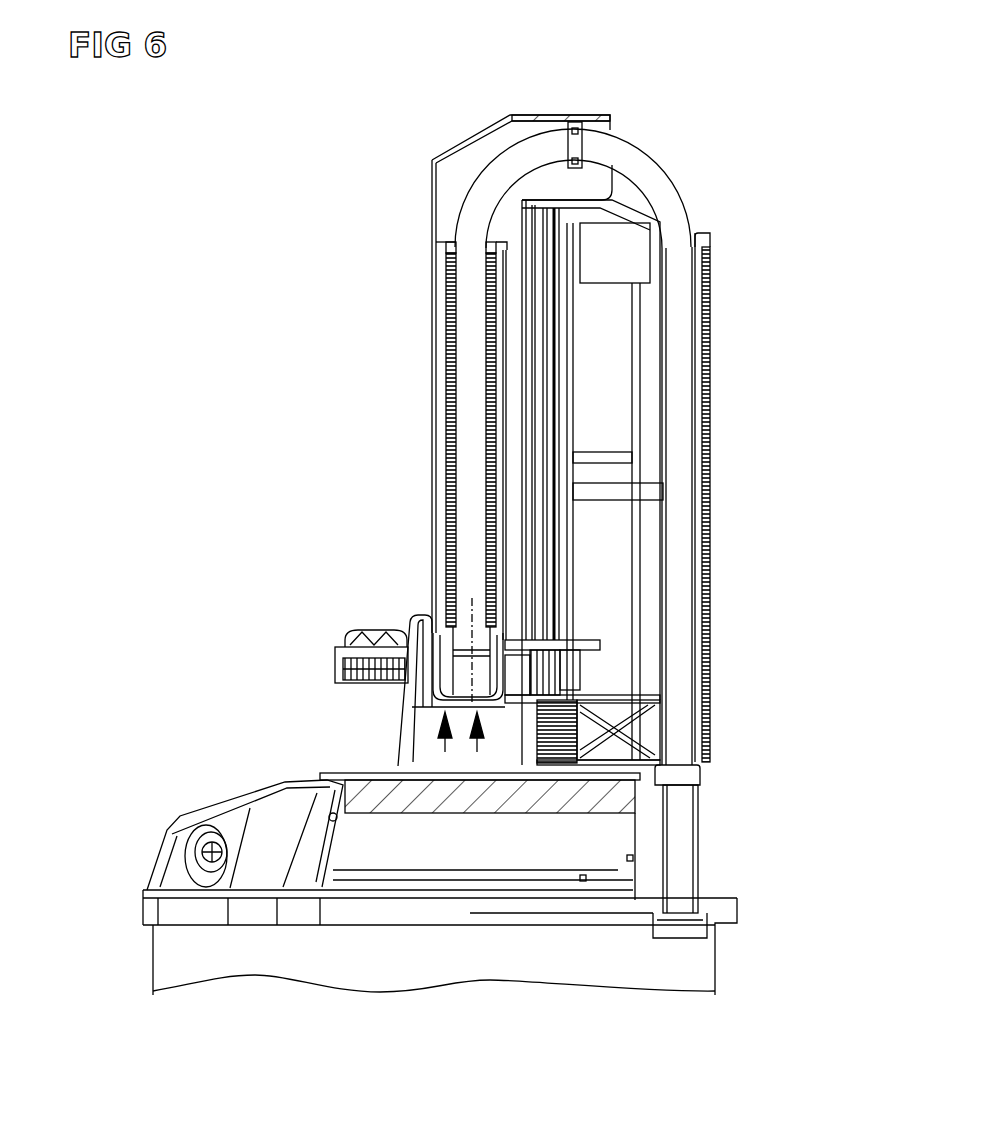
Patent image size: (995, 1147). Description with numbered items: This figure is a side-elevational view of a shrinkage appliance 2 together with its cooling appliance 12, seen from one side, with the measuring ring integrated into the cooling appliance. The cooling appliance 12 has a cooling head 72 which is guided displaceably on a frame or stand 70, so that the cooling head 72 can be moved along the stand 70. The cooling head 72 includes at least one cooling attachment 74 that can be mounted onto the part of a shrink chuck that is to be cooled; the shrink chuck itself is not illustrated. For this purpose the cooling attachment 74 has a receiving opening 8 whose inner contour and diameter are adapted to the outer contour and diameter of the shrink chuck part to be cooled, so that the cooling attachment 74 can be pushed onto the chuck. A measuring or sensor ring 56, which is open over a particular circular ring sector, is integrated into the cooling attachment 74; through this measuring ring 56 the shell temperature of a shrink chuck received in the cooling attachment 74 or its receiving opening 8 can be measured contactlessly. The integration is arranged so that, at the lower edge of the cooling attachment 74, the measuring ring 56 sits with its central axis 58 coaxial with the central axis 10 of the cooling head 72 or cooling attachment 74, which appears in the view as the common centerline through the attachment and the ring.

The shrinkage appliance 2 is at (697, 112).
The frame or stand 70 is at (432, 428).
The central axis 58 is at (358, 634).
The central axis 10 is at (432, 603).
The cooling appliance 12 is at (380, 700).
The cooling head 72 is at (377, 895).
The cooling attachment 74 is at (445, 752).
The receiving opening 8 is at (477, 752).
The measuring or sensor ring 56 is at (537, 780).